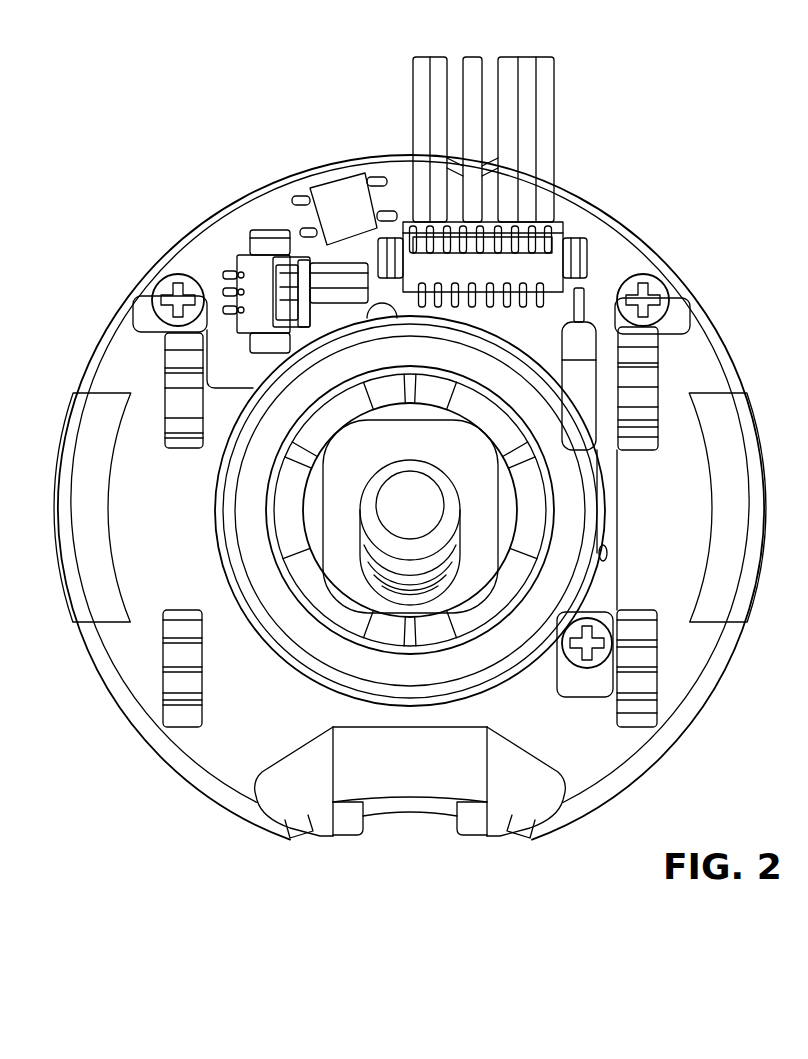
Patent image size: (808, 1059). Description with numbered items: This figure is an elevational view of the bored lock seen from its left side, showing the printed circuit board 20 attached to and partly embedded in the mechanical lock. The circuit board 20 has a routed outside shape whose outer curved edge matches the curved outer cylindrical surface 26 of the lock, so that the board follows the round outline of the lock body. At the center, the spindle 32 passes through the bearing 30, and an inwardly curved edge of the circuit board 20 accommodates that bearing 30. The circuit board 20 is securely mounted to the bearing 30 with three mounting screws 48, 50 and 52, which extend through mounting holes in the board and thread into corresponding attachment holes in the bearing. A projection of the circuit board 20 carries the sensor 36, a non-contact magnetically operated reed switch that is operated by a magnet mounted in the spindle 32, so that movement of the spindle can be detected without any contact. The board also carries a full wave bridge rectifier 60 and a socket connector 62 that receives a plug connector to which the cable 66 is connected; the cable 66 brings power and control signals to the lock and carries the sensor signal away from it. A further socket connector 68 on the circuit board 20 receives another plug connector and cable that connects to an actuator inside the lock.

The printed circuit board 20 is at (610, 258).
The curved outer cylindrical surface 26 is at (733, 378).
The bearing 30 is at (217, 528).
The spindle 32 is at (328, 597).
The sensor 36 is at (577, 375).
The mounting screw 48 is at (167, 290).
The mounting screw 50 is at (657, 284).
The mounting screw 52 is at (600, 613).
The full wave bridge rectifier 60 is at (338, 200).
The socket connector 62 is at (525, 267).
The cable 66 is at (410, 93).
The socket connector 68 is at (243, 262).